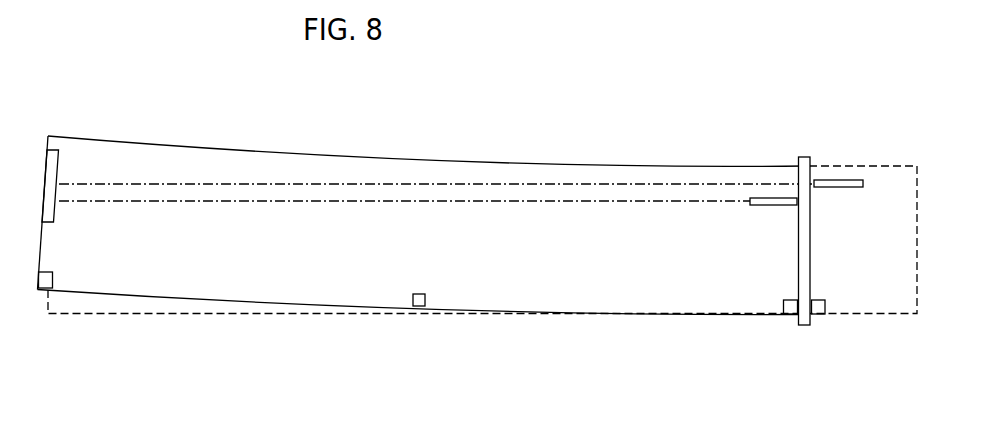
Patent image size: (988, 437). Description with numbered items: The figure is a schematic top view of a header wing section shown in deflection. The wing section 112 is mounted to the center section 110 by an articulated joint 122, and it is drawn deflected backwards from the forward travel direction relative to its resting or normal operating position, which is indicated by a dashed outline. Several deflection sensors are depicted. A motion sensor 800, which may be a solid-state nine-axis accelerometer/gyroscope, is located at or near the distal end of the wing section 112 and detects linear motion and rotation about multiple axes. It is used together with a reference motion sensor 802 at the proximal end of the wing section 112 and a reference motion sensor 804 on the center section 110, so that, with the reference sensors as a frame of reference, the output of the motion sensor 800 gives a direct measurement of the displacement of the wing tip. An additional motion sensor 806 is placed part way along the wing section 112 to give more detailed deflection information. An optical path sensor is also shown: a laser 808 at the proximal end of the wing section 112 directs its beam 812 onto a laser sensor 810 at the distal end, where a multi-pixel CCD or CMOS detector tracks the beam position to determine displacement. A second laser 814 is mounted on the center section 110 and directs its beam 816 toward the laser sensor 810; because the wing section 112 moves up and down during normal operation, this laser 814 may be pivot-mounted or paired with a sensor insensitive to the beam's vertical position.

The center section 110 is at (893, 283).
The wing section 112 is at (583, 290).
The articulated joint 122 is at (807, 157).
The motion sensor 800 is at (52, 283).
The reference motion sensor 802 is at (790, 313).
The reference motion sensor 804 is at (815, 313).
The additional motion sensor 806 is at (417, 308).
The laser 808 is at (768, 198).
The laser sensor 810 is at (55, 174).
The beam 812 is at (518, 182).
The laser 814 is at (833, 182).
The beam 816 is at (620, 182).